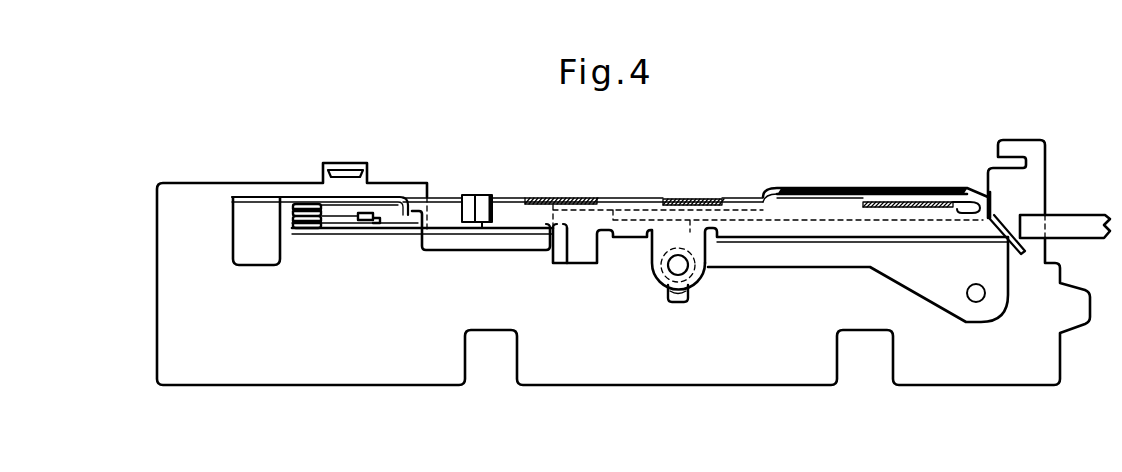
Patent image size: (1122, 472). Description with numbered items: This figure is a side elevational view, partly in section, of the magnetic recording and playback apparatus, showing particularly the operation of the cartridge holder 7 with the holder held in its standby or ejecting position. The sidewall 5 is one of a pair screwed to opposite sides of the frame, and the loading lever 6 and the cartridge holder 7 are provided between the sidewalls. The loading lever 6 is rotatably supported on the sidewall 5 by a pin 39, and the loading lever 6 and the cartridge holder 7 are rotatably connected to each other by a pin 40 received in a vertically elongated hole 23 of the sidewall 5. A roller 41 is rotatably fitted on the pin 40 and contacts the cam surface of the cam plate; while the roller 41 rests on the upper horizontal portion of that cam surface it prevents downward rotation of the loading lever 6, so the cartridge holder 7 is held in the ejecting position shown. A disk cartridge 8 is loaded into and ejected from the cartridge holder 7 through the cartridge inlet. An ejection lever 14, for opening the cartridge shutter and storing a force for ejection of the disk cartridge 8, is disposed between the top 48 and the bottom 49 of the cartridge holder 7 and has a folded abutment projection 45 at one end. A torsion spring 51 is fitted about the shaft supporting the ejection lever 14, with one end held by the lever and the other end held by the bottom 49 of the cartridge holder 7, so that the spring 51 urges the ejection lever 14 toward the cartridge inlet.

The sidewall 5 is at (442, 367).
The loading lever 6 is at (837, 189).
The cartridge holder 7 is at (557, 197).
The disk cartridge 8 is at (1082, 218).
The ejection lever 14 is at (443, 218).
The vertically elongated hole 23 is at (683, 303).
The pin 39 is at (976, 302).
The pin 40 is at (677, 256).
The roller 41 is at (698, 232).
The folded abutment projection 45 is at (482, 194).
The top of the cartridge holder 48 is at (307, 197).
The bottom of the cartridge holder 49 is at (348, 240).
The torsion spring 51 is at (378, 212).